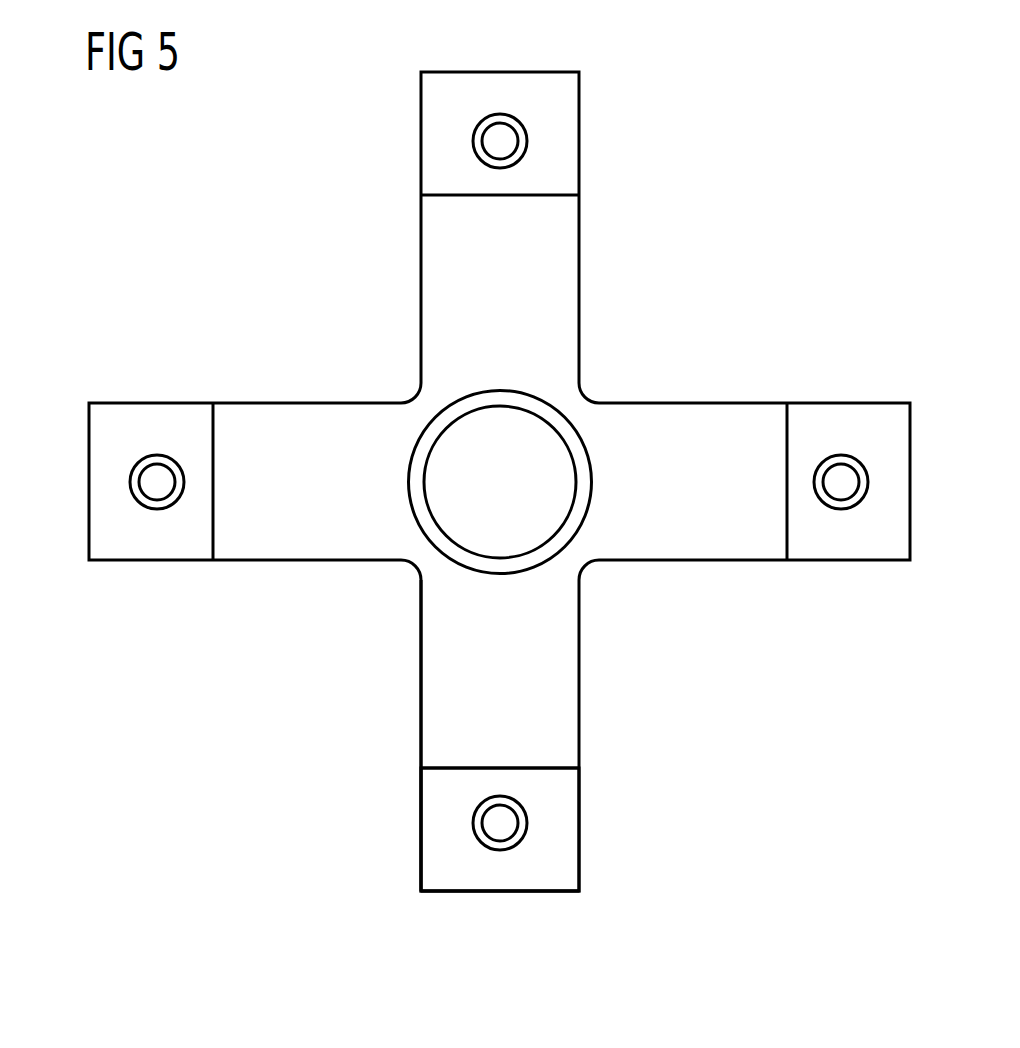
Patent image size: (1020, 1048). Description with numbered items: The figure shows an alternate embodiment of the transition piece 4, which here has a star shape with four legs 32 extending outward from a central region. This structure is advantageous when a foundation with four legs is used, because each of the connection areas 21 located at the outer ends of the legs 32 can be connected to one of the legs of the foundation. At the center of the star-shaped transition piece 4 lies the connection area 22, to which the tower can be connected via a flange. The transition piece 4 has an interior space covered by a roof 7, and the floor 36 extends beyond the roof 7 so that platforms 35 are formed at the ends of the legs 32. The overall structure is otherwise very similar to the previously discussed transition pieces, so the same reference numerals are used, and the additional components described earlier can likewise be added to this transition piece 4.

The transition piece 4 is at (779, 136).
The roof 7 is at (563, 673).
The connection area 22 is at (562, 386).
The connection areas 21 is at (546, 822).
The floor 36 is at (560, 858).
The platforms 35 is at (498, 872).
The legs 32 is at (376, 790).